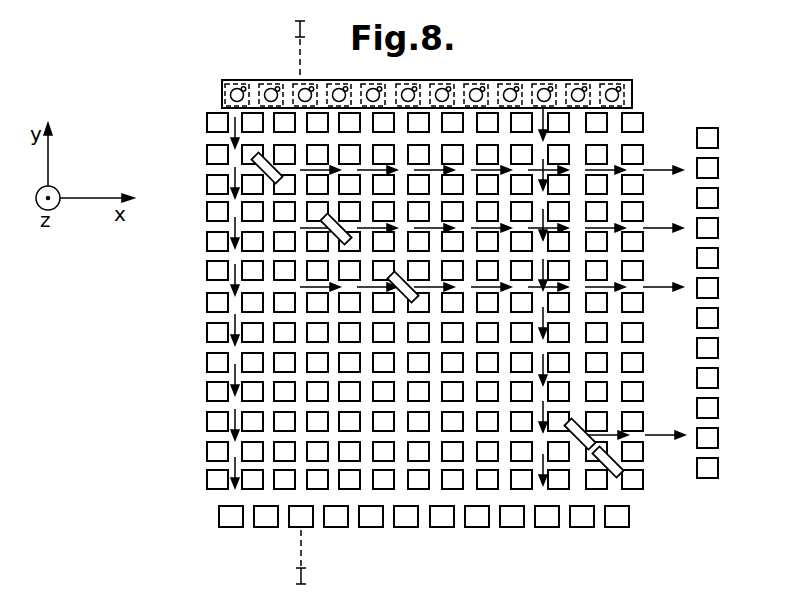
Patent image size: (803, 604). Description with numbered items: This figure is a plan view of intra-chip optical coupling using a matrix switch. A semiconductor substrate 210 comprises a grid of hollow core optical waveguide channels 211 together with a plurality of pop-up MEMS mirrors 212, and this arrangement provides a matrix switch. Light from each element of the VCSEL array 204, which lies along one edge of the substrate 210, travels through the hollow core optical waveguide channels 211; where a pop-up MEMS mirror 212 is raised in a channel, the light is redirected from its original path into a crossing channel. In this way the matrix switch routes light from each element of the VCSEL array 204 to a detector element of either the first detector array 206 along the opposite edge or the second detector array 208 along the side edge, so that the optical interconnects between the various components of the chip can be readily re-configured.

The VCSEL array 204 is at (643, 78).
The first detector array 206 is at (628, 528).
The second detector array 208 is at (719, 482).
The semiconductor substrate 210 is at (436, 290).
The hollow core optical waveguide channels 211 is at (215, 147).
The pop-up MEMS mirrors 212 is at (252, 162).